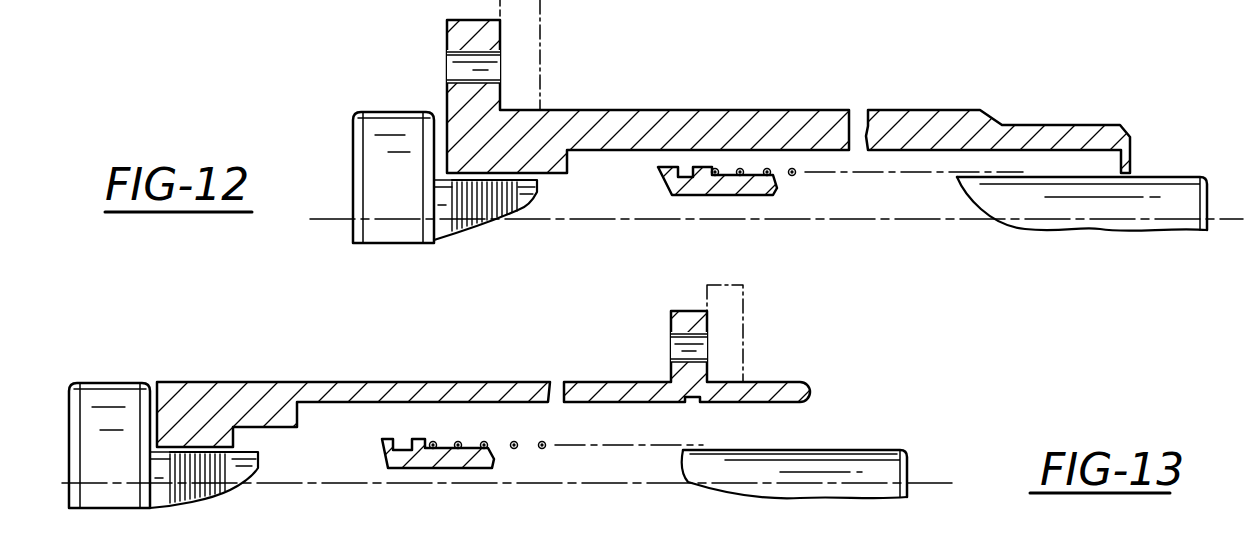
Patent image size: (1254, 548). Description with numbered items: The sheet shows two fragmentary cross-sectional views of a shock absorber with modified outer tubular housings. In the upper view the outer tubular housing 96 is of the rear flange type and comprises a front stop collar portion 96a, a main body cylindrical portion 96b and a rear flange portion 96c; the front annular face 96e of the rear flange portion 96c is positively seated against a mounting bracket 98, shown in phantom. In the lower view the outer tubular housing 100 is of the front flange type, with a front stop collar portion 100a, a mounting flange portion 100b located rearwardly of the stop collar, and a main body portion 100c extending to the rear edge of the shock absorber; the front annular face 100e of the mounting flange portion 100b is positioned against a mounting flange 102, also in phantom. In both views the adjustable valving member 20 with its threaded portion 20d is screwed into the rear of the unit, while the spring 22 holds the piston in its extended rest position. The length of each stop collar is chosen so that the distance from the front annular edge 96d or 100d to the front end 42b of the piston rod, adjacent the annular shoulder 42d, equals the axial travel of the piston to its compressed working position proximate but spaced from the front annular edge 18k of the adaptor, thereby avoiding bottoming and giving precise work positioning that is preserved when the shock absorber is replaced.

In FIG. 12, the adjustable valving member 20 is at (350, 116).
In FIG. 13, the adjustable valving member 20 is at (103, 383).
In FIG. 12, the threaded portion 20d is at (522, 204).
In FIG. 12, the spring 22 is at (715, 172).
In FIG. 13, the spring 22 is at (460, 444).
In FIG. 12, the front annular edge of adaptor 18k is at (777, 189).
In FIG. 13, the front annular edge of adaptor 18k is at (494, 462).
In FIG. 12, the front end of piston rod 42b is at (1215, 221).
In FIG. 13, the annular shoulder 42d is at (915, 463).
In FIG. 12, the outer tubular housing 96 is at (794, 93).
In FIG. 12, the front stop collar portion 96a is at (1046, 113).
In FIG. 12, the main body cylindrical portion 96b is at (809, 110).
In FIG. 12, the rear flange portion 96c is at (605, 93).
In FIG. 12, the front annular edge of collar portion 96d is at (1130, 137).
In FIG. 12, the front annular face of flange 96e is at (500, 86).
In FIG. 12, the mounting bracket 98 is at (546, 48).
In FIG. 13, the outer tubular housing 100 is at (557, 358).
In FIG. 13, the front stop collar portion 100a is at (760, 336).
In FIG. 13, the mounting flange portion 100b is at (684, 311).
In FIG. 13, the main body portion 100c is at (493, 382).
In FIG. 13, the front annular edge of collar portion 100d is at (760, 336).
In FIG. 13, the front annular face of flange 100e is at (707, 331).
In FIG. 13, the mounting flange 102 is at (745, 302).